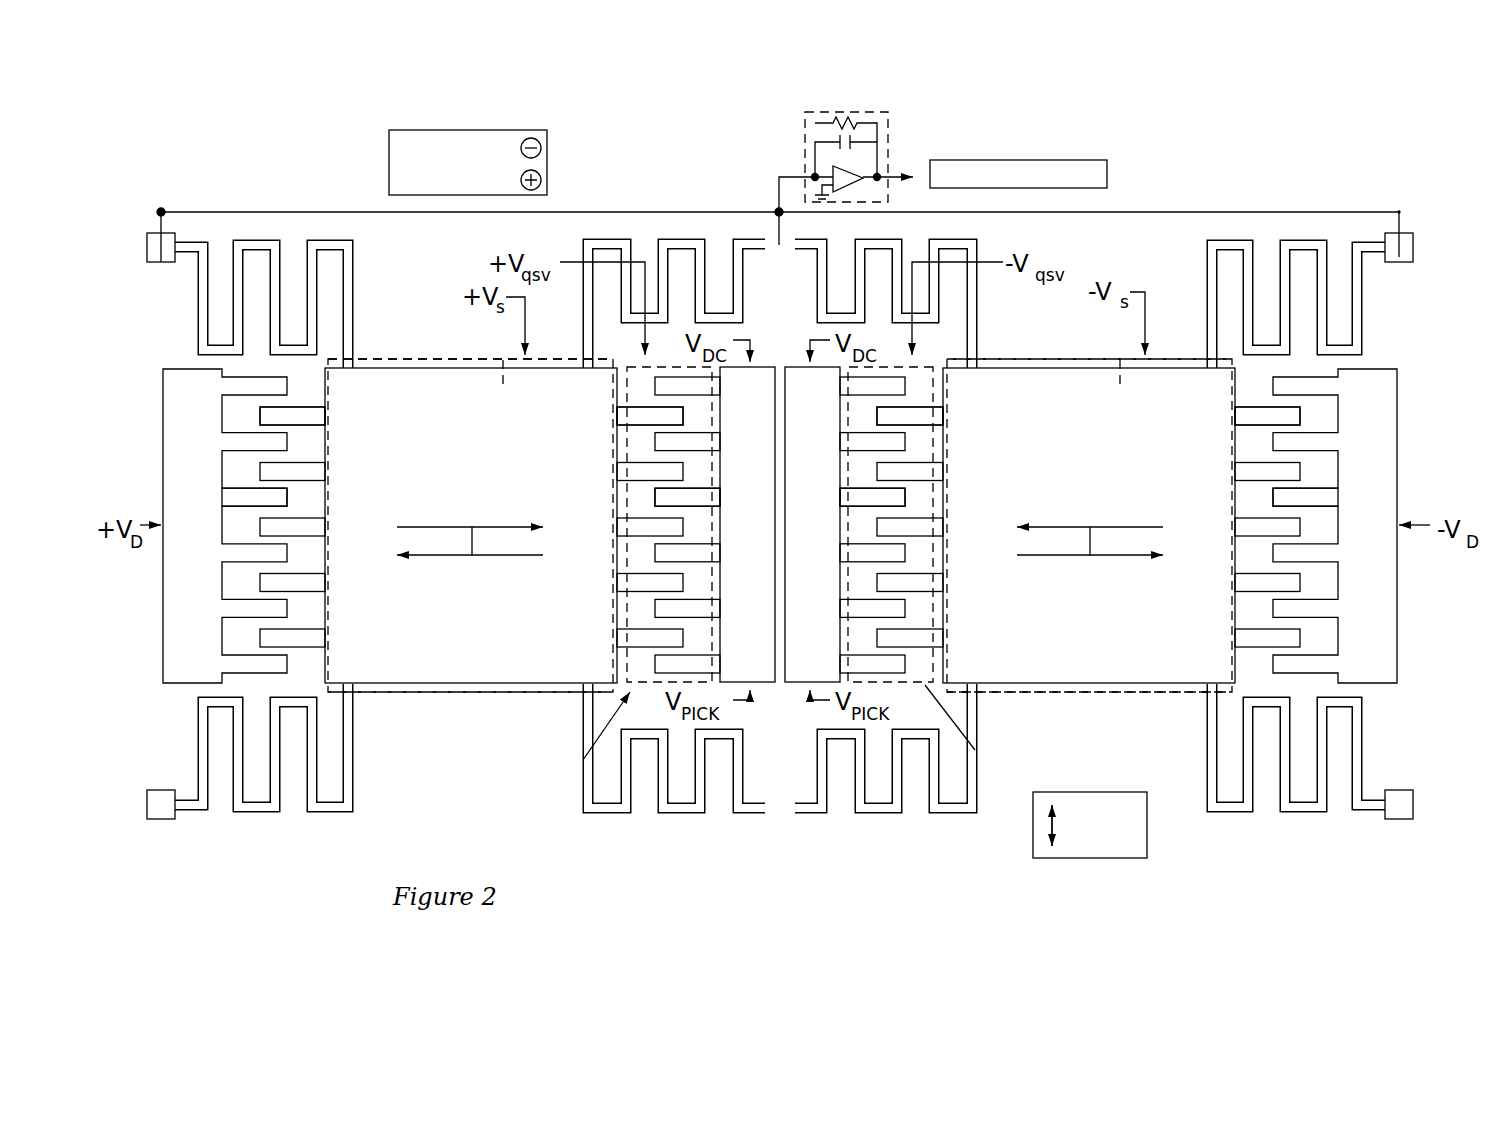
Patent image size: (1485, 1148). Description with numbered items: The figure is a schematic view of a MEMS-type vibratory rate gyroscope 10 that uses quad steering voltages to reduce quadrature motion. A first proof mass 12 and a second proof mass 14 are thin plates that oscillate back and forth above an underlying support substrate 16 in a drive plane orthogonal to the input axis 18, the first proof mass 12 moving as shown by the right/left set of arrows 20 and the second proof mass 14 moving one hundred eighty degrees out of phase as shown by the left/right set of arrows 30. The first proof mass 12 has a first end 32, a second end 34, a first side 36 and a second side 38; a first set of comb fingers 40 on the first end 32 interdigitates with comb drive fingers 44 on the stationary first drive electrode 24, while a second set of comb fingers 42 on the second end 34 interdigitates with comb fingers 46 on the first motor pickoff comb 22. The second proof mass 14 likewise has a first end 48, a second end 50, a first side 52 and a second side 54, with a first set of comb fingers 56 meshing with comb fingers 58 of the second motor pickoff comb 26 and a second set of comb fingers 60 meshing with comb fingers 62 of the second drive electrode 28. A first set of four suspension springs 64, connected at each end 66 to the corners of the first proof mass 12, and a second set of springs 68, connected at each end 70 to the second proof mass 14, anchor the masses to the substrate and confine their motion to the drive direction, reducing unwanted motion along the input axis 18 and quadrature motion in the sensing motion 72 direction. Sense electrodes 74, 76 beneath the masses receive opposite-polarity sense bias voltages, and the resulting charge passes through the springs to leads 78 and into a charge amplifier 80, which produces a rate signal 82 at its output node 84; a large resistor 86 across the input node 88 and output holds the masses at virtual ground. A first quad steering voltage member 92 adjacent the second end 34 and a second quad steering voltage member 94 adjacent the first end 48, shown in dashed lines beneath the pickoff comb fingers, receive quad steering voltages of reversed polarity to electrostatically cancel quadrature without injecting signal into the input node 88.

The gyroscope 10 is at (680, 155).
The first proof mass 12 is at (477, 672).
The second proof mass 14 is at (1095, 672).
The support substrate 16 is at (488, 781).
The input axis 18 is at (1097, 858).
The right/left set of arrows 20 is at (472, 555).
The first motor pickoff comb 22 is at (765, 645).
The first drive electrode 24 is at (185, 672).
The second motor pickoff comb 26 is at (822, 645).
The second drive electrode 28 is at (1378, 672).
The left/right set of arrows 30 is at (1090, 555).
The first end 32 is at (330, 605).
The second end 34 is at (615, 605).
The first side 36 is at (408, 360).
The second side 38 is at (410, 692).
The first set of comb fingers 40 is at (293, 415).
The second set of comb fingers 42 is at (650, 415).
The comb drive fingers 44 is at (262, 500).
The comb fingers 46 is at (690, 500).
The first end 48 is at (945, 605).
The second end 50 is at (1232, 605).
The first side 52 is at (1025, 360).
The second side 54 is at (1027, 692).
The first set of comb fingers 56 is at (910, 415).
The comb fingers 58 is at (870, 500).
The second set of comb fingers 60 is at (1267, 415).
The comb fingers 62 is at (1298, 500).
The first set of suspension springs 64 is at (258, 243).
The spring ends 66 is at (355, 360).
The second set of springs 68 is at (950, 243).
The spring ends 70 is at (968, 360).
The sensing motion 72 is at (389, 150).
The sense electrode 74 is at (503, 360).
The sense electrode 76 is at (1120, 360).
The leads 78 is at (161, 262).
The charge amplifier 80 is at (888, 128).
The rate signal 82 is at (1100, 160).
The output node 84 is at (877, 175).
The resistor 86 is at (850, 118).
The input node 88 is at (815, 177).
The first quad steering voltage member 92 is at (589, 734).
The second quad steering voltage member 94 is at (970, 727).